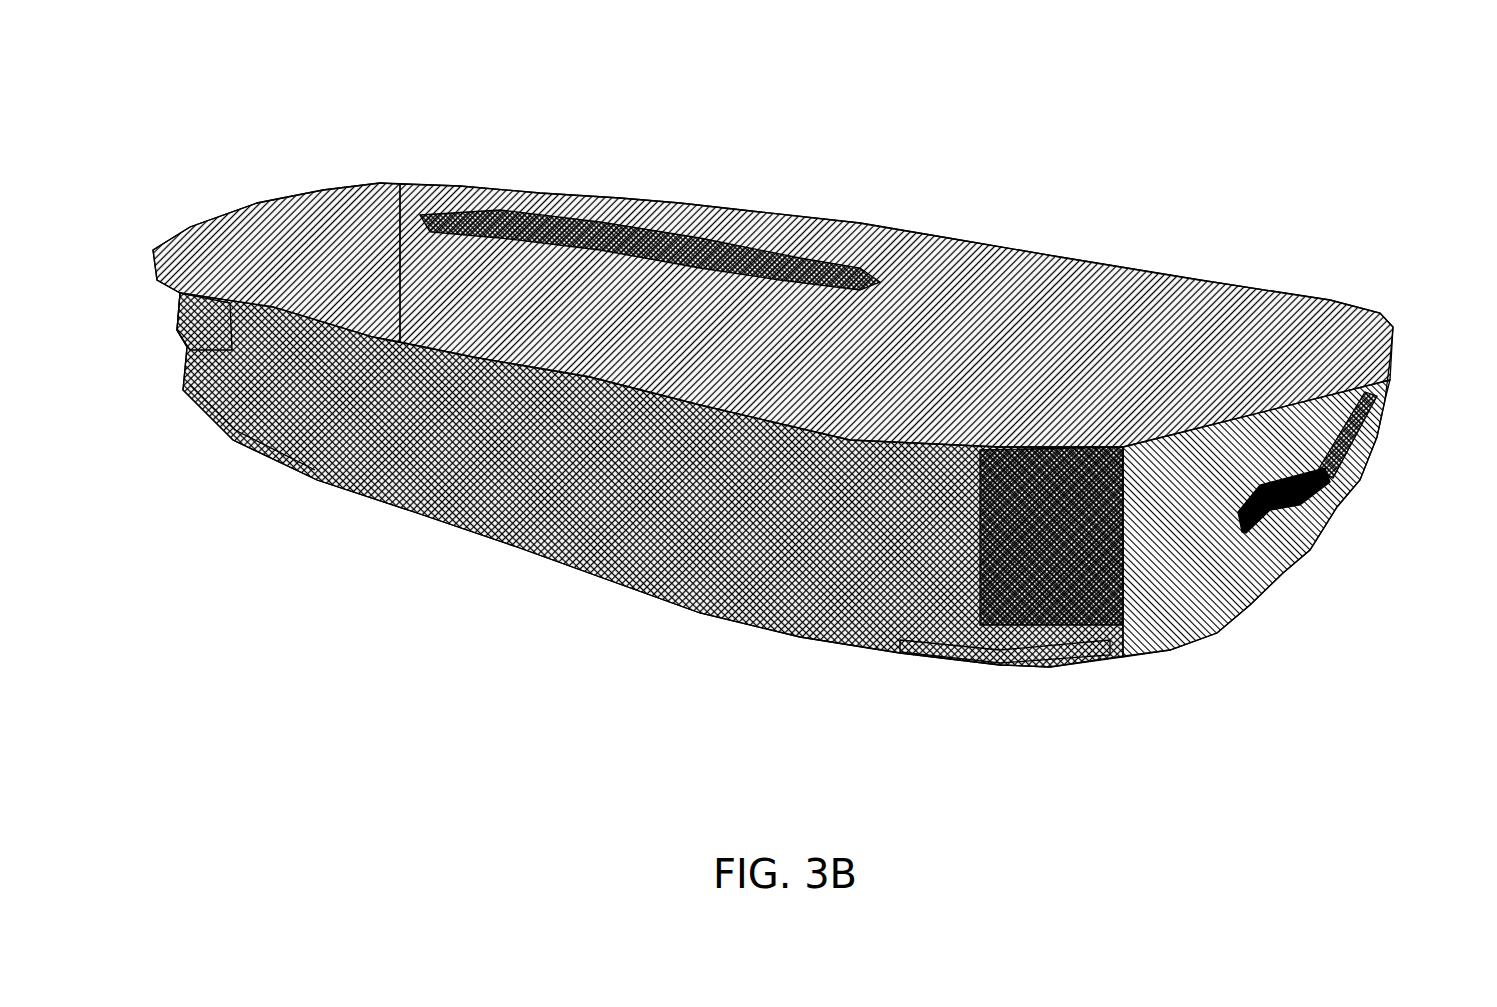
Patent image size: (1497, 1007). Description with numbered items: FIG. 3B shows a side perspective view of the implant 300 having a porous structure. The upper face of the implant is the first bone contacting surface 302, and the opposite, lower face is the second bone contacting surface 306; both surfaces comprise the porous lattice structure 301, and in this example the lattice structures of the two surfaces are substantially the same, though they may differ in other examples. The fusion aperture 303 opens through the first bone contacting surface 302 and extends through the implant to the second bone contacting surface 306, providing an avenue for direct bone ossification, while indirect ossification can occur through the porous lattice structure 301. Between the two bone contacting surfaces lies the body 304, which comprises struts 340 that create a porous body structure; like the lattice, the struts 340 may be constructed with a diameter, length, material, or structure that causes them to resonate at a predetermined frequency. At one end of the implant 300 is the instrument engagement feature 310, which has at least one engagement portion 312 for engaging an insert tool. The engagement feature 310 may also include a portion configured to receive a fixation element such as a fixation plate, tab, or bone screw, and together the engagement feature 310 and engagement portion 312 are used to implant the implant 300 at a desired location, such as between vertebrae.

The implant 300 is at (215, 62).
The porous lattice structure 301 is at (1112, 285).
The first bone contacting surface 302 is at (263, 228).
The fusion aperture 303 is at (670, 235).
The body 304 is at (172, 320).
The second bone contacting surface 306 is at (263, 440).
The instrument engagement feature 310 is at (1185, 597).
The engagement portion 312 is at (1330, 477).
The struts 340 is at (443, 468).